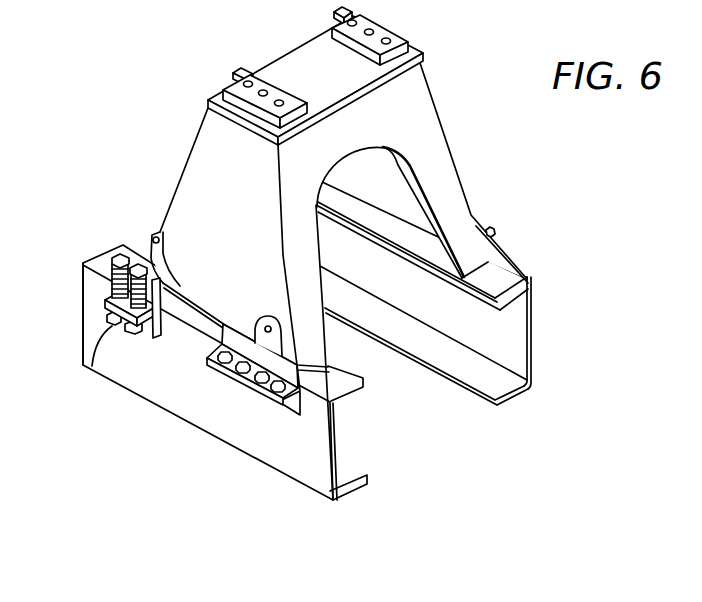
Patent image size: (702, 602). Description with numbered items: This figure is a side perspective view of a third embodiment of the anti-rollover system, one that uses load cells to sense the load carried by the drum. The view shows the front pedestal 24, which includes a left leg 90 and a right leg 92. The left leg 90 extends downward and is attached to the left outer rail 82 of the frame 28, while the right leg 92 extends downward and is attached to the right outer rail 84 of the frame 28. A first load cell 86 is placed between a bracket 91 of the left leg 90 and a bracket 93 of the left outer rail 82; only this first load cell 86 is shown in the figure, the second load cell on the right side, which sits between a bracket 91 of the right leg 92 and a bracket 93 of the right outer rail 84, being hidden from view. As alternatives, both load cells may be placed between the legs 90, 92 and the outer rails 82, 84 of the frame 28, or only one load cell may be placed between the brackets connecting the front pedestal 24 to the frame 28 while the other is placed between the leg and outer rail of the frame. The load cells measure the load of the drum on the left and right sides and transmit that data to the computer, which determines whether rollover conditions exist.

The front pedestal 24 is at (300, 62).
The frame 28 is at (66, 307).
The left outer rail 82 is at (315, 438).
The right outer rail 84 is at (508, 343).
The first load cell 86 is at (97, 366).
The left leg 90 is at (204, 181).
The bracket 91 is at (160, 293).
The right leg 92 is at (423, 139).
The bracket 93 is at (151, 339).